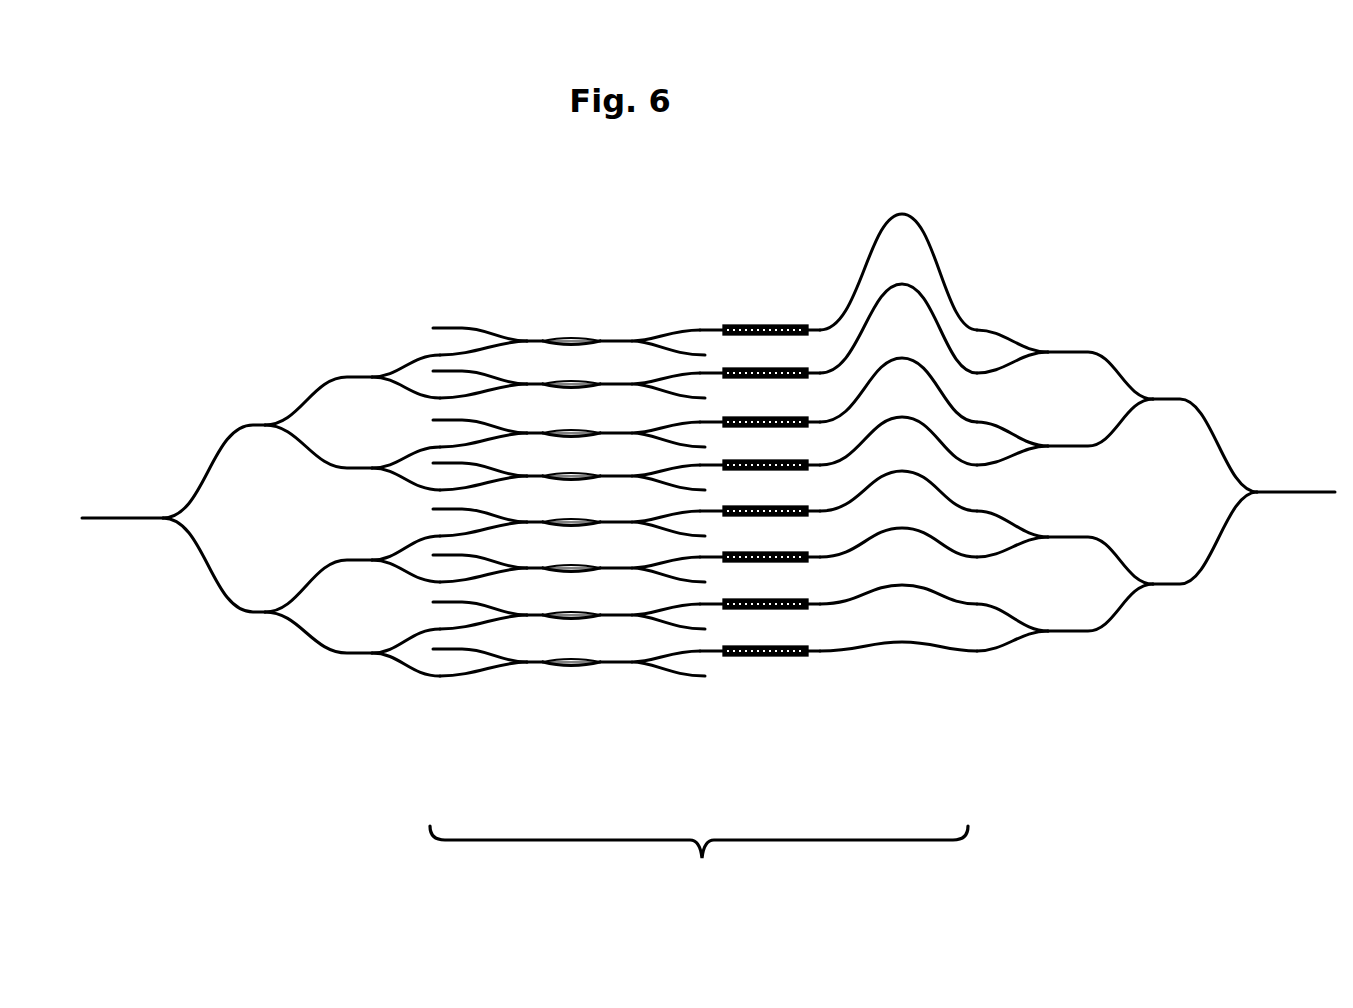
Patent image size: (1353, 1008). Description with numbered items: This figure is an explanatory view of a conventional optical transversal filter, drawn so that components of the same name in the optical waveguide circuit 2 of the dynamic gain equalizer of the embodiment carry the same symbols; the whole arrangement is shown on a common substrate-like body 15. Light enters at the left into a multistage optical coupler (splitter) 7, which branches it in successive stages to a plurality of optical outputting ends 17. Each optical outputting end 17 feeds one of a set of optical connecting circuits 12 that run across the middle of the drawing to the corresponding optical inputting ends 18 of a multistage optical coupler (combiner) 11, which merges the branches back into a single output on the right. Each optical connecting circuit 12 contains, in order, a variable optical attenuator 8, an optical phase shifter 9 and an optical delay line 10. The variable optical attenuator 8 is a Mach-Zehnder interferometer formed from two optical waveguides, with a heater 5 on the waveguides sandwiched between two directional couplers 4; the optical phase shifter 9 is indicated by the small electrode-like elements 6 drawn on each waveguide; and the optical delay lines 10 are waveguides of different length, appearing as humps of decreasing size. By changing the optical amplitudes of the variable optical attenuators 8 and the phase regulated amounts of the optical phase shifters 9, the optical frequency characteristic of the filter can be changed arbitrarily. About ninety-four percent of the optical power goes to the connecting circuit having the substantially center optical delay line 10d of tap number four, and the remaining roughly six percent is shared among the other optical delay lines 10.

The optical waveguide circuit 2 is at (1015, 268).
The directional coupler 4 is at (523, 338).
The heater 5 is at (575, 337).
The thin film heater 6 is at (770, 324).
The multistage optical coupler (splitter) 7 is at (75, 723).
The variable optical attenuator 8 is at (433, 722).
The optical phase shifter 9 is at (758, 540).
The optical delay line 10 is at (890, 506).
The optical delay line of tap number 4 10d is at (899, 475).
The multistage optical coupler (combiner) 11 is at (1310, 720).
The optical connecting circuit 12 is at (699, 865).
The substrate 15 is at (1174, 220).
The optical outputting end 17 is at (438, 350).
The optical inputting end 18 is at (982, 328).